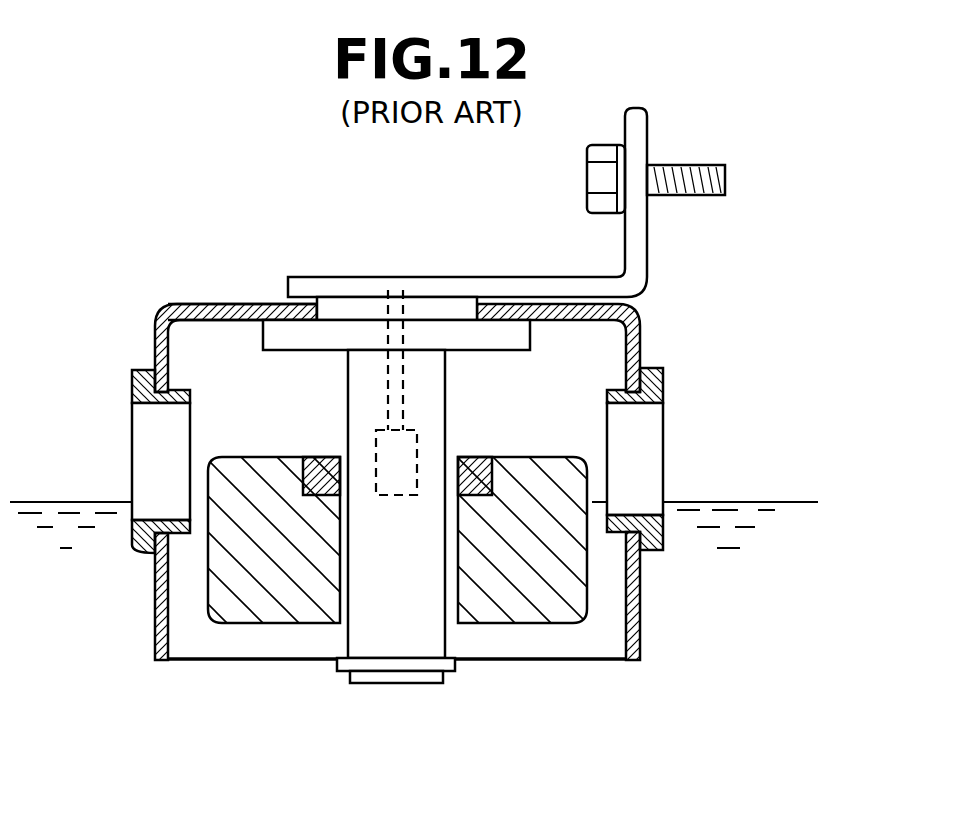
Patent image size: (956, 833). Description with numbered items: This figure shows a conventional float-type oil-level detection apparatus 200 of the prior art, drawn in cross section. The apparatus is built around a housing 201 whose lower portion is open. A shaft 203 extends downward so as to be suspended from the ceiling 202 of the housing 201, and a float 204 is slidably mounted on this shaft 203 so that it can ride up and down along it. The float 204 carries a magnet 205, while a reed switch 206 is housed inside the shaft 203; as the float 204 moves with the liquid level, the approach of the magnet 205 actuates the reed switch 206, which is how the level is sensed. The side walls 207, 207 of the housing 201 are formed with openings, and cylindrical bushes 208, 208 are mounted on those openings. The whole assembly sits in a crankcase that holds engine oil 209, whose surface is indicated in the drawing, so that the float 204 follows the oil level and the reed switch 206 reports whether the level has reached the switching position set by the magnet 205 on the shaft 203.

The level detection apparatus 200 is at (443, 379).
The housing 201 is at (196, 287).
The ceiling 202 is at (240, 305).
The shaft 203 is at (460, 345).
The float 204 is at (546, 444).
The magnet 205 is at (470, 455).
The reed switch 206 is at (408, 453).
The side walls 207 is at (155, 612).
The cylindrical bushes 208 is at (140, 553).
The engine oil 209 is at (753, 530).